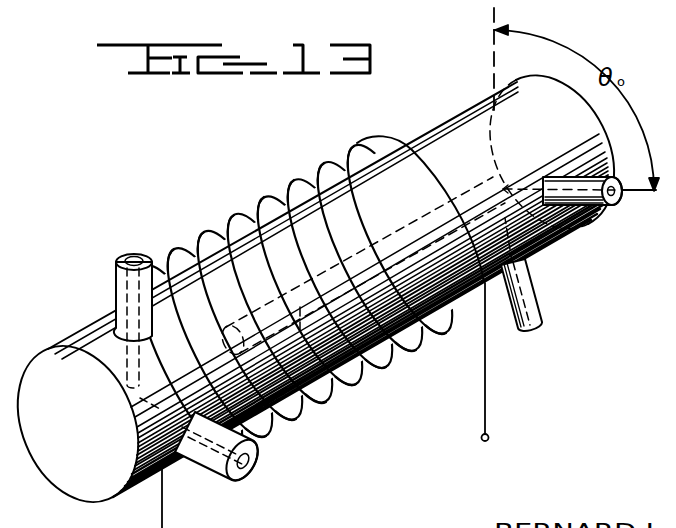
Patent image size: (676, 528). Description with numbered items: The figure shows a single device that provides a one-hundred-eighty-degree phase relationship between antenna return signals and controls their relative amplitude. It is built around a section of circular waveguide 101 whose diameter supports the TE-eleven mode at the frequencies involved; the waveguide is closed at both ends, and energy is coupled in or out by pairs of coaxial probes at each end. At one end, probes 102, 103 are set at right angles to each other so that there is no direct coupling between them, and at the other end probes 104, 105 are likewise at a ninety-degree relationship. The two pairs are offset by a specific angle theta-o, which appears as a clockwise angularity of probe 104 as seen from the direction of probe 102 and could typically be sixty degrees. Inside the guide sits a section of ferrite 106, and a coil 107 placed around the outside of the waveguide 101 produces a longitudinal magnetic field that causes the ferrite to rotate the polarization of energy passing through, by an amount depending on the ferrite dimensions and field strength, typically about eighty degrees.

The circular waveguide 101 is at (447, 131).
The coaxial probe 102 is at (114, 270).
The coaxial probe 103 is at (240, 482).
The coaxial probe 104 is at (613, 206).
The coaxial probe 105 is at (533, 331).
The ferrite 106 is at (333, 396).
The coil 107 is at (309, 295).